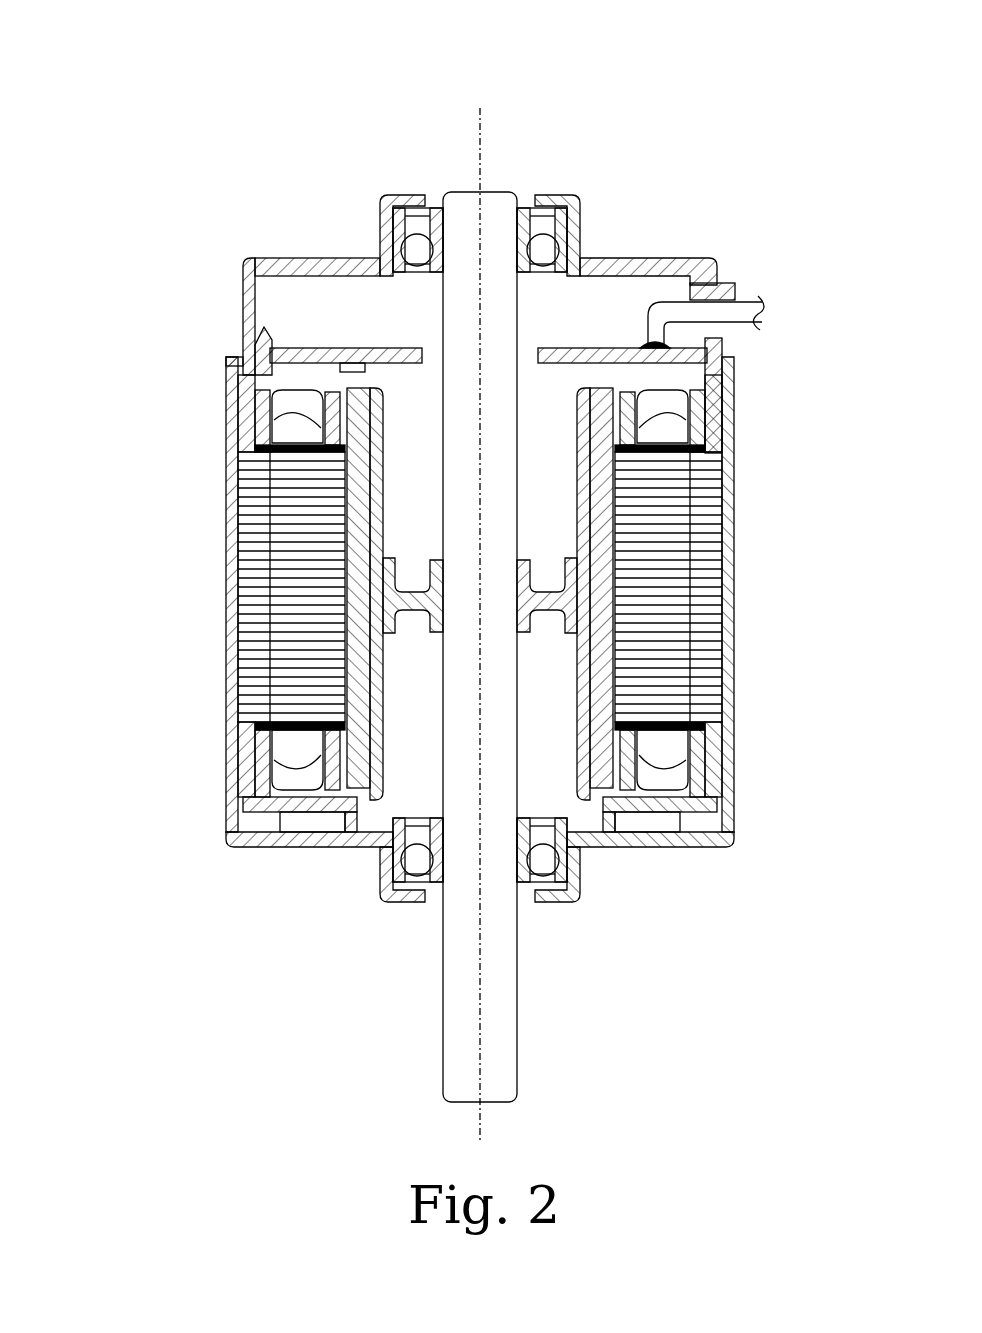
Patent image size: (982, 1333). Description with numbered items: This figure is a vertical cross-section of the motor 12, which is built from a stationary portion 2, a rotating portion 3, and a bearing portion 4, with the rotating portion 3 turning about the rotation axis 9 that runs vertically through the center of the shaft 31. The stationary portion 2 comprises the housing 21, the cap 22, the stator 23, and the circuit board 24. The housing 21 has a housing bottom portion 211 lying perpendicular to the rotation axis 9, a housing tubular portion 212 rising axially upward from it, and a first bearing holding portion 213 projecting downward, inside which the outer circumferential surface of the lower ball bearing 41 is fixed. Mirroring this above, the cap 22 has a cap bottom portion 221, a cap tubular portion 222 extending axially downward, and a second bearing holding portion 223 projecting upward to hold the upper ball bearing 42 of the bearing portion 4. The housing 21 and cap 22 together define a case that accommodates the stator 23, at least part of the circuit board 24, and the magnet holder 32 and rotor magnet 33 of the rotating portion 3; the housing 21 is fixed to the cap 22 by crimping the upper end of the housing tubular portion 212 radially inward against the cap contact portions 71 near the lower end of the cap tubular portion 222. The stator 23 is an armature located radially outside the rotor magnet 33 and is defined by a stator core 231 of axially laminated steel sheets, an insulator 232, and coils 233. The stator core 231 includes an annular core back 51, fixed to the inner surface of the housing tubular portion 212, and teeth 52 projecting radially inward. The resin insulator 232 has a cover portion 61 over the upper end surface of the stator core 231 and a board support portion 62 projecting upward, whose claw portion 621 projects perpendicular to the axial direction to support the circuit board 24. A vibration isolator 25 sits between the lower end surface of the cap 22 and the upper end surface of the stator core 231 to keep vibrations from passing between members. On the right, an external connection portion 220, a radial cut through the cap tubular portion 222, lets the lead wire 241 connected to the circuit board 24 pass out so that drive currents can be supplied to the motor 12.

The motor 12 is at (362, 100).
The rotation axis 9 is at (478, 143).
The shaft 31 is at (465, 978).
The stationary portion 2 is at (444, 563).
The housing 21 is at (444, 672).
The housing bottom portion 211 is at (287, 838).
The housing tubular portion 212 is at (226, 690).
The first bearing holding portion 213 is at (440, 896).
The cap 22 is at (457, 257).
The cap bottom portion 221 is at (300, 262).
The cap tubular portion 222 is at (243, 313).
The second bearing holding portion 223 is at (448, 226).
The bearing portion 4 is at (513, 585).
The lower ball bearing 41 is at (584, 868).
The upper ball bearing 42 is at (581, 248).
The rotating portion 3 is at (573, 640).
The magnet holder 32 is at (588, 545).
The rotor magnet 33 is at (605, 620).
The stator 23 is at (387, 603).
The stator core 231 is at (408, 587).
The core back 51 is at (236, 531).
The teeth 52 is at (236, 502).
The insulator 232 is at (408, 603).
The cover portion 61 is at (236, 457).
The board support portion 62 is at (236, 416).
The coils 233 is at (238, 388).
The claw portion 621 is at (258, 333).
The cap contact portions 71 is at (232, 372).
The vibration isolator 25 is at (722, 424).
The circuit board 24 is at (623, 352).
The lead wire 241 is at (743, 310).
The external connection portion 220 is at (720, 330).